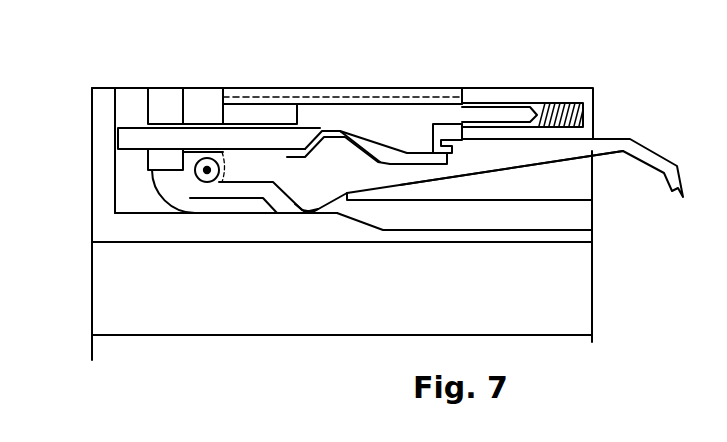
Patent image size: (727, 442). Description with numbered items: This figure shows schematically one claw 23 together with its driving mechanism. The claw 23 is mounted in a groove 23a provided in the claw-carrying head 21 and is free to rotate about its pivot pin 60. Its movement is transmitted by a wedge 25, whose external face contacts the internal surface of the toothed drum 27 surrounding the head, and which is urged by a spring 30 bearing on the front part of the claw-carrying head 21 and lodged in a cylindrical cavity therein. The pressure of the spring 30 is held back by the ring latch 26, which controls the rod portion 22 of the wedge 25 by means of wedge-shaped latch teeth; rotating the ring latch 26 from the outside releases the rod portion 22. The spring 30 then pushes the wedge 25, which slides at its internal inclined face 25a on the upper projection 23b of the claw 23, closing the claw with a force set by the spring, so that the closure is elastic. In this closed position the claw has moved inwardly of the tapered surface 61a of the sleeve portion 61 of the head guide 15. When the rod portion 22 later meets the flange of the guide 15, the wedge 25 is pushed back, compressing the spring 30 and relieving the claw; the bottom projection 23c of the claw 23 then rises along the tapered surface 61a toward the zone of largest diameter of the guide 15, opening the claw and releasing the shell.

The head guide 15 is at (98, 98).
The rod portion 22 is at (115, 145).
The claw-carrying head 21 is at (147, 203).
The pivot pin 60 is at (203, 178).
The ring latch 26 is at (205, 100).
The wedge 25 is at (315, 118).
The upper projection 23b is at (335, 150).
The toothed drum 27 is at (388, 93).
The internal inclined face 25a is at (373, 145).
The spring 30 is at (558, 103).
The claw 23 is at (650, 157).
The groove 23a is at (578, 177).
The bottom projection 23c is at (303, 213).
The tapered surface 61a is at (368, 216).
The sleeve portion 61 is at (345, 233).